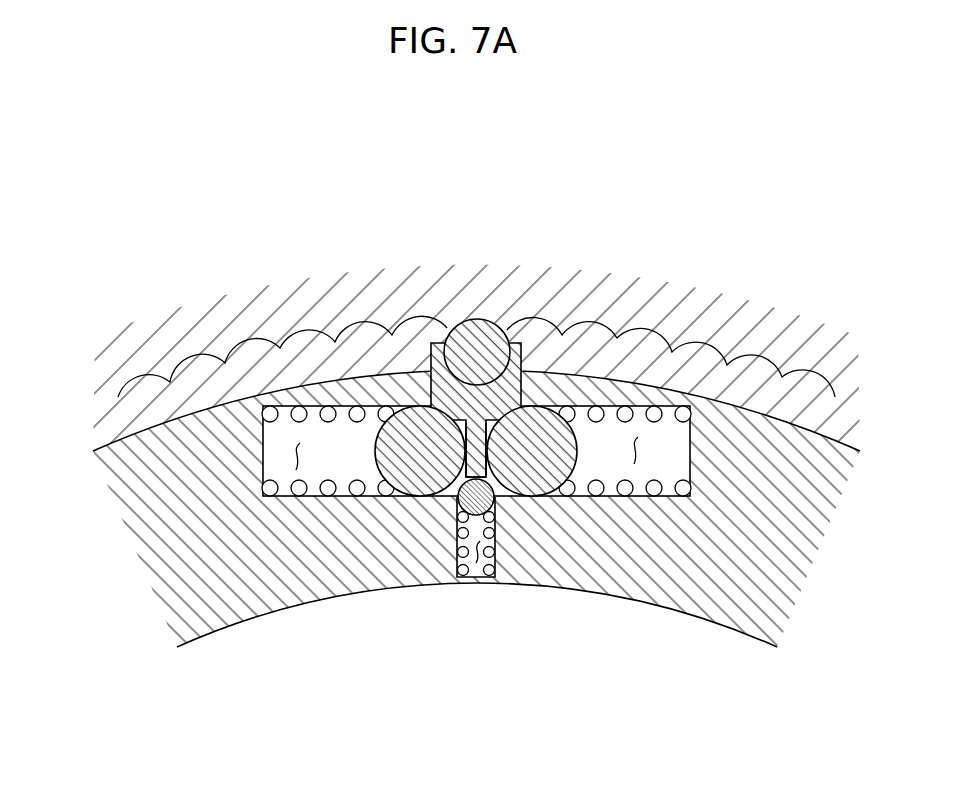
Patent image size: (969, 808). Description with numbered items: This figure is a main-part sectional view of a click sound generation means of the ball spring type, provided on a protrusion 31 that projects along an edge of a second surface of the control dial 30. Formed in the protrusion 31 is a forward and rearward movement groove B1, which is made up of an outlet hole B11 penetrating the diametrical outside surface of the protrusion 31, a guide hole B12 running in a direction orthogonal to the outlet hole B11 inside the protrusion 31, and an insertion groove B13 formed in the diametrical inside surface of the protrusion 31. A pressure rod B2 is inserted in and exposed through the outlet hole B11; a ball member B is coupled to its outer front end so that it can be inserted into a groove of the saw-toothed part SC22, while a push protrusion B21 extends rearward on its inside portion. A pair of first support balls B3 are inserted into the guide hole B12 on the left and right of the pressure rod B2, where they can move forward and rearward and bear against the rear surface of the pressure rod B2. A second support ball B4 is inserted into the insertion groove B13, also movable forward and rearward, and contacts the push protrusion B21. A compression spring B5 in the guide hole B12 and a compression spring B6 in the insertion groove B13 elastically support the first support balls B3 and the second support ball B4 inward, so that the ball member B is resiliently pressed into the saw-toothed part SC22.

The control dial 30 is at (449, 534).
The protrusion 31 is at (193, 620).
The saw-toothed part SC22 is at (757, 356).
The ball member B is at (480, 442).
The forward and rearward movement groove B1 is at (435, 393).
The pressure rod B2 is at (493, 392).
The first support balls B3 is at (398, 472).
The second support ball B4 is at (498, 500).
The compression spring B5 is at (298, 406).
The compression spring B6 is at (460, 578).
The outlet hole B11 is at (430, 387).
The guide hole B12 is at (290, 455).
The insertion groove B13 is at (510, 577).
The push protrusion B21 is at (473, 452).